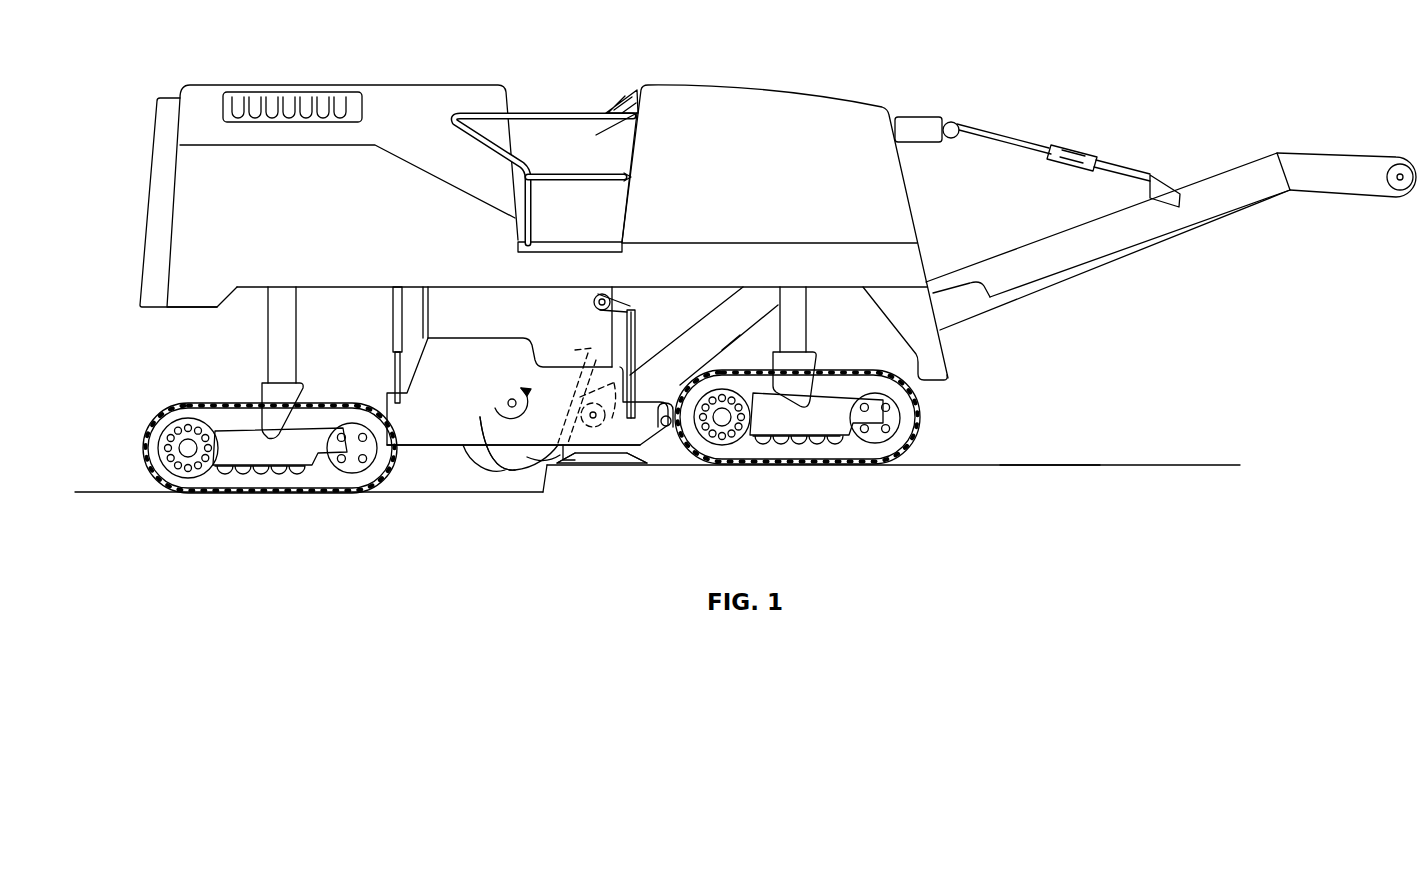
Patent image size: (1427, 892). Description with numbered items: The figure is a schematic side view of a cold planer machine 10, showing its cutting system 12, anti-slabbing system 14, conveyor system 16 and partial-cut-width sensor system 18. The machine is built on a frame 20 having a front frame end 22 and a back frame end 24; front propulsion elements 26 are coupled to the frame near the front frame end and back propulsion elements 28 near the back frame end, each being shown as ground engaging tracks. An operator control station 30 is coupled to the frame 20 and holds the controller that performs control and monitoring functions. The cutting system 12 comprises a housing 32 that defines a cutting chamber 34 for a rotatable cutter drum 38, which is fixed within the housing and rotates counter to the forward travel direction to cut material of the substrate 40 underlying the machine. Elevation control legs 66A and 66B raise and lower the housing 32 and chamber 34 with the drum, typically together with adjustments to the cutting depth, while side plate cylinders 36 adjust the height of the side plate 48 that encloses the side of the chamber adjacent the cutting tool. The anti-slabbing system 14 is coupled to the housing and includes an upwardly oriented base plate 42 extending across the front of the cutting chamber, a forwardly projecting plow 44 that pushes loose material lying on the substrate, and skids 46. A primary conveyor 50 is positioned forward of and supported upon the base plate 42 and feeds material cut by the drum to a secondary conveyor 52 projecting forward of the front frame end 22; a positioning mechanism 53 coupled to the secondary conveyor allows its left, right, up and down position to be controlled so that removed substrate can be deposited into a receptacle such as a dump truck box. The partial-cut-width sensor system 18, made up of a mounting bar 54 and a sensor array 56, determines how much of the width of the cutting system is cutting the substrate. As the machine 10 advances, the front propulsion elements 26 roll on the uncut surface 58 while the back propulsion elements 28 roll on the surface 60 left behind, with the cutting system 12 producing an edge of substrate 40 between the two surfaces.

The cold planer machine 10 is at (147, 62).
The cutting system 12 is at (471, 522).
The anti-slabbing system 14 is at (622, 493).
The conveyor system 16 is at (1039, 300).
The partial-cut-width sensor system 18 is at (667, 460).
The frame 20 is at (462, 313).
The front frame end 22 is at (935, 220).
The back frame end 24 is at (128, 238).
The front propulsion elements 26 is at (920, 423).
The back propulsion elements 28 is at (147, 448).
The operator control station 30 is at (566, 96).
The housing 32 is at (462, 315).
The cutting chamber 34 is at (473, 322).
The side plate cylinders 36 is at (393, 317).
The rotatable cutter drum 38 is at (527, 457).
The substrate 40 is at (1135, 467).
The base plate 42 is at (578, 352).
The plow 44 is at (640, 453).
The skids 46 is at (575, 458).
The side plate 48 is at (502, 327).
The primary conveyor 50 is at (722, 343).
The secondary conveyor 52 is at (1132, 247).
The positioning mechanism 53 is at (1164, 119).
The mounting bar 54 is at (682, 382).
The sensor array 56 is at (688, 458).
The surface 58 is at (1040, 465).
The surface 60 is at (130, 490).
The elevation control leg 66A is at (793, 312).
The elevation control leg 66B is at (287, 306).